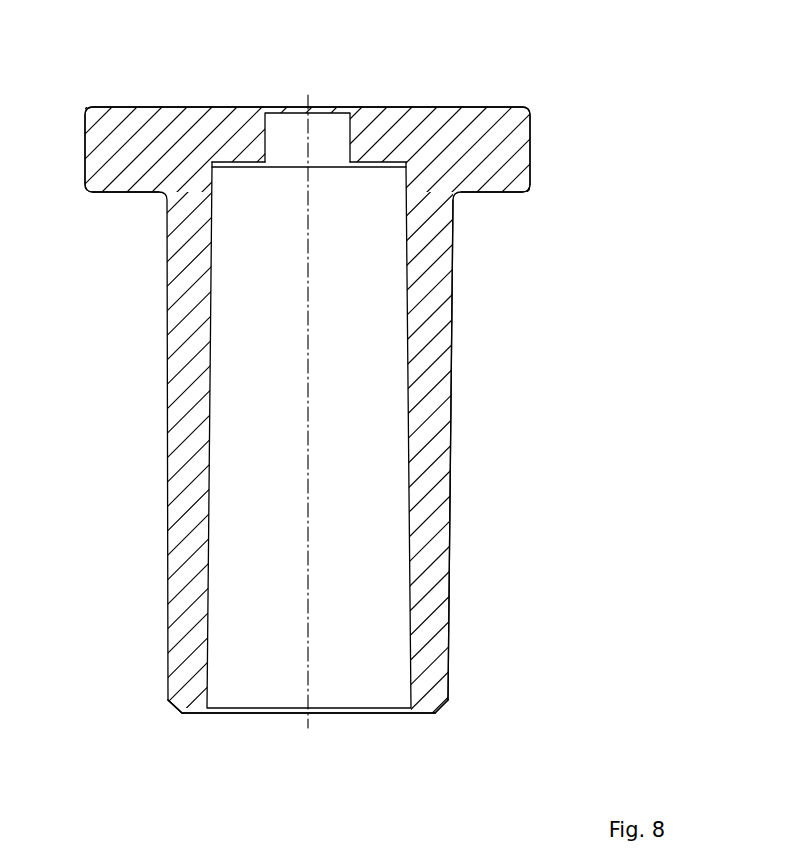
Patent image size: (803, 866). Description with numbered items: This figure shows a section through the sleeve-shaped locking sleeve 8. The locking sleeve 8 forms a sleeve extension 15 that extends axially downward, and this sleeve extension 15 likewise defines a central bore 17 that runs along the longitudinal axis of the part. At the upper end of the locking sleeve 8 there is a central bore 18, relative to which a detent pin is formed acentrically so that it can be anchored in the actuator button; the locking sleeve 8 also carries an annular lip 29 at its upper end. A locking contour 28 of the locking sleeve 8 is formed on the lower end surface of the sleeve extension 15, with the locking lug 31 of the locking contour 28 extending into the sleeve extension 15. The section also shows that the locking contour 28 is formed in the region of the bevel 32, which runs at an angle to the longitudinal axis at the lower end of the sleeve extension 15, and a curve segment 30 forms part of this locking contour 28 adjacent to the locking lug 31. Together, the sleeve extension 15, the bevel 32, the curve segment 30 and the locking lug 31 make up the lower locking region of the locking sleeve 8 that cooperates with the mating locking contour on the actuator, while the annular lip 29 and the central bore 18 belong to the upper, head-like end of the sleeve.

The locking sleeve 8 is at (401, 108).
The sleeve extension 15 is at (430, 420).
The central bore 17 is at (225, 391).
The central bore 18 is at (278, 131).
The locking contour 28 is at (425, 714).
The annular lip 29 is at (499, 160).
The curve segment 30 is at (178, 707).
The locking lug 31 is at (178, 707).
The bevel 32 is at (446, 712).